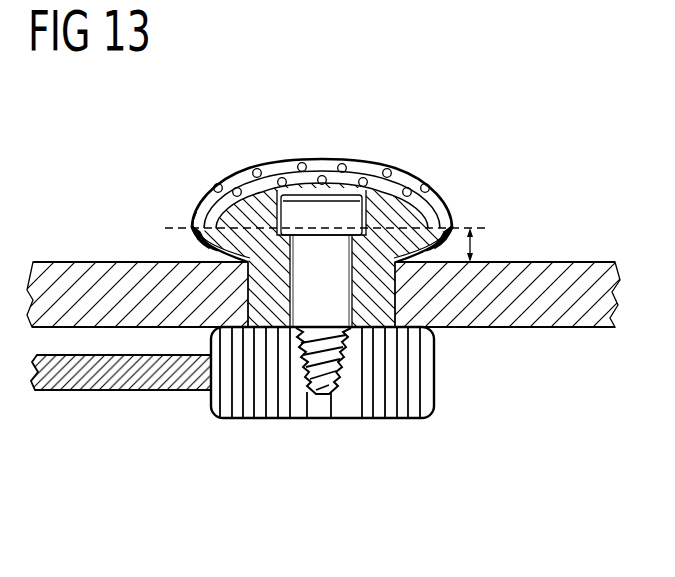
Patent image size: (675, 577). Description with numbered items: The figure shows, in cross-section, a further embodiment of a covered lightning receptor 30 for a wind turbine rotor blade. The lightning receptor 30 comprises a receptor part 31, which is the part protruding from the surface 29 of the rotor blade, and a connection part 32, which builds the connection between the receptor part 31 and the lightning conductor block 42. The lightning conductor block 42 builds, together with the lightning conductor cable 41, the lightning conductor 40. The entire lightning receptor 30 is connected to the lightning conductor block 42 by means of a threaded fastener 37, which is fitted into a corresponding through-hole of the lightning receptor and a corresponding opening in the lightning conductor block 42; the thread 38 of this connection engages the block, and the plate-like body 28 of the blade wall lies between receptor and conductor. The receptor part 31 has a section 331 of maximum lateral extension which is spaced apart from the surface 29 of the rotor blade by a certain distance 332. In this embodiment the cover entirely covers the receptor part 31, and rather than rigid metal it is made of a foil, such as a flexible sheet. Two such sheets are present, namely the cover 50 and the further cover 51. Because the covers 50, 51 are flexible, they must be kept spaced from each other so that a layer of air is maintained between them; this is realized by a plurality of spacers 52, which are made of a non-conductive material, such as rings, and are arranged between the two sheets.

The plate / skin element 28 is at (319, 289).
The surface of the rotor blade 29 is at (100, 262).
The lightning receptor 30 is at (339, 170).
The receptor part 31 is at (198, 230).
The connection part 32 is at (388, 284).
The threaded fastener 37 is at (305, 210).
The thread 38 is at (342, 375).
The lightning conductor 40 is at (264, 427).
The lightning conductor cable 41 is at (105, 381).
The lightning conductor block 42 is at (354, 395).
The cover 50 is at (337, 175).
The further cover 51 is at (436, 191).
The spacers 52 is at (343, 163).
The section of the receptor part with the maximum lateral extension 331 is at (206, 238).
The distance 332 is at (478, 236).